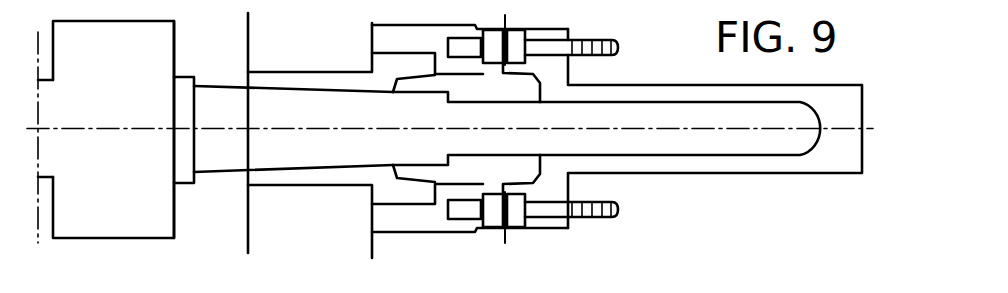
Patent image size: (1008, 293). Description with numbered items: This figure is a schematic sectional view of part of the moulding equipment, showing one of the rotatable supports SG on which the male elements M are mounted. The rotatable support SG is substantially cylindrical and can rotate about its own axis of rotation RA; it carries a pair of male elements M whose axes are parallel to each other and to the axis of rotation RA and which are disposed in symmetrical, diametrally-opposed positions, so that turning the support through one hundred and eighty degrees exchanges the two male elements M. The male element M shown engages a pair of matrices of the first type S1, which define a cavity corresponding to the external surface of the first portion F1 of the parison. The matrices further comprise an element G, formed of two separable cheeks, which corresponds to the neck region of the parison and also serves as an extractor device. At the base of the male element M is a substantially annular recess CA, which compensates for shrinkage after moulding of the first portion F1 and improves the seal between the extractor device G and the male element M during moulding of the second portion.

The axis of rotation RA is at (88, 131).
The rotatable support SG is at (127, 238).
The male element M is at (320, 167).
The annular recess CA is at (450, 155).
The extractor device G is at (493, 233).
The first portion F1 is at (688, 173).
The matrices of the first type S1 is at (803, 173).